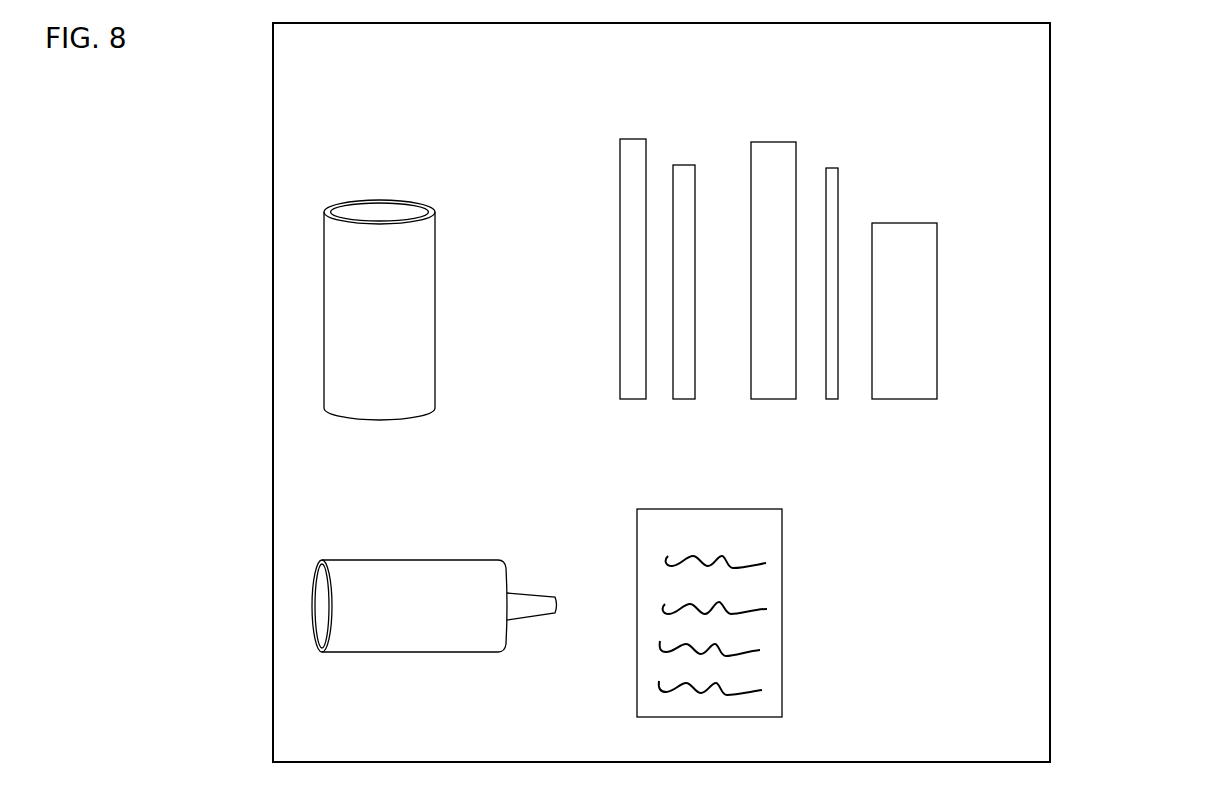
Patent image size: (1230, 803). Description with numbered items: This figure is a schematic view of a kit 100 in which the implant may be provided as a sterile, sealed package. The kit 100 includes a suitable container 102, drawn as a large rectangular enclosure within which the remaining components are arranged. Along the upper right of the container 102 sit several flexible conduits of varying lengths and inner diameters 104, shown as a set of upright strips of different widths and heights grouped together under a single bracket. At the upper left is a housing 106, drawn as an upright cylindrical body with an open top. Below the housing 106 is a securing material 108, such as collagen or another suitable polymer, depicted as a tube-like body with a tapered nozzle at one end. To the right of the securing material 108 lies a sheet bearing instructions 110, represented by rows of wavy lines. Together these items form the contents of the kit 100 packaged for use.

The kit 100 is at (1100, 308).
The container 102 is at (1050, 145).
The flexible conduits of varying lengths and inner diameters 104 is at (947, 130).
The housing 106 is at (435, 257).
The securing material 108 is at (428, 560).
The instructions 110 is at (782, 582).